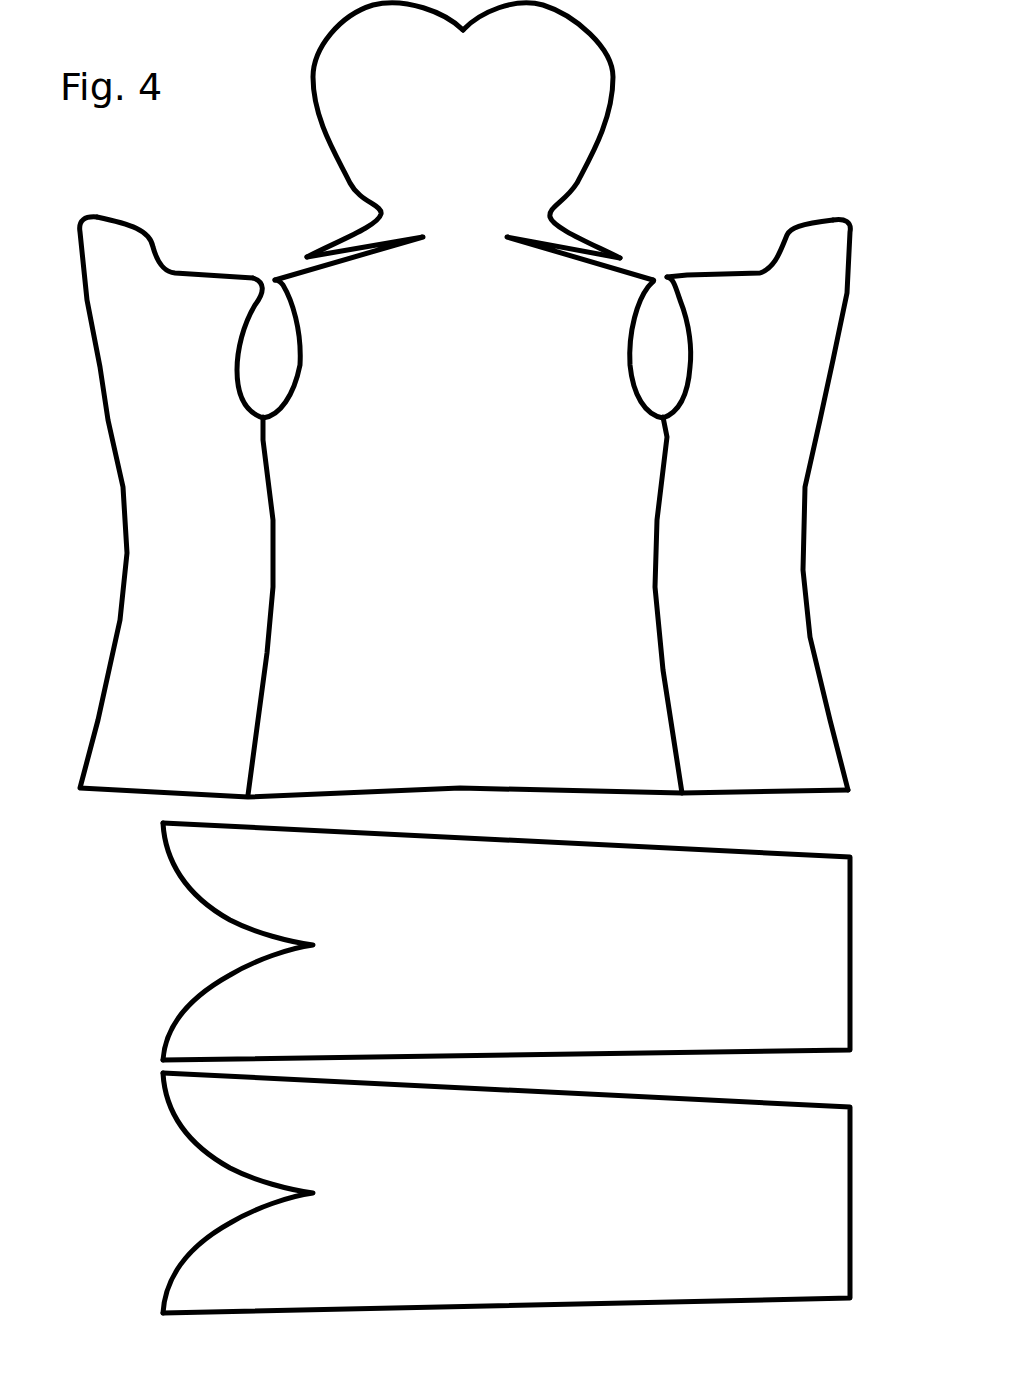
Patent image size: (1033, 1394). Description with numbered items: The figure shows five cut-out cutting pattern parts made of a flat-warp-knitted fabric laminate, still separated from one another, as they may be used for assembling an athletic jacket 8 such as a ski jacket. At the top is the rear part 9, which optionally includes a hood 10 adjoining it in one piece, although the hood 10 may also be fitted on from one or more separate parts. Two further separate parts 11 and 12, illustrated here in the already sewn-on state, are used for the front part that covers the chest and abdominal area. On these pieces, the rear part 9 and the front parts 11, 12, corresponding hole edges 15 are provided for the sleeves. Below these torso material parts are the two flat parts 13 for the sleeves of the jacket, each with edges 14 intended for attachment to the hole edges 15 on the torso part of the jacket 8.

The athletic jacket 8 is at (663, 223).
The rear part 9 is at (517, 353).
The hood 10 is at (513, 78).
The front part 11 is at (160, 620).
The front part 12 is at (743, 630).
The flat part for sleeve 13 is at (763, 967).
The edge 14 is at (217, 967).
The hole edge 15 is at (293, 367).